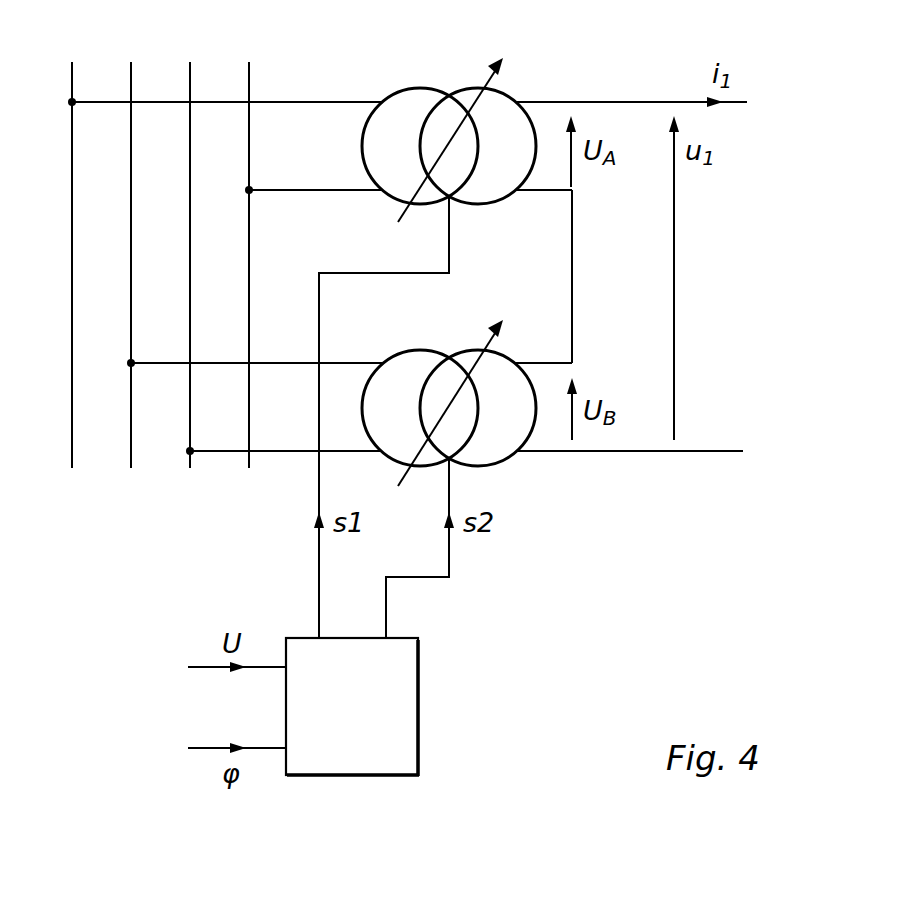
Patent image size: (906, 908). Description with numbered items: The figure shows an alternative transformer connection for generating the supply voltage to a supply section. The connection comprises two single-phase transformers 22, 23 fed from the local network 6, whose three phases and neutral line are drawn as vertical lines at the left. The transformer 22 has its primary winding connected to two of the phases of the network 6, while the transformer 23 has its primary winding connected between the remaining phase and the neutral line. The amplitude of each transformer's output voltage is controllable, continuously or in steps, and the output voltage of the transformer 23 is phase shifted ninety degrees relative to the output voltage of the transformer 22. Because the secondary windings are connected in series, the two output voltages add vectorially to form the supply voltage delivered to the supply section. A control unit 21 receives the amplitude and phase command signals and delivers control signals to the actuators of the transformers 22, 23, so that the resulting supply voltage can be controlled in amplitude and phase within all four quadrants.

The local network 6 is at (260, 484).
The control unit 21 is at (400, 703).
The single-phase transformer 22 is at (493, 468).
The single-phase transformer 23 is at (429, 86).